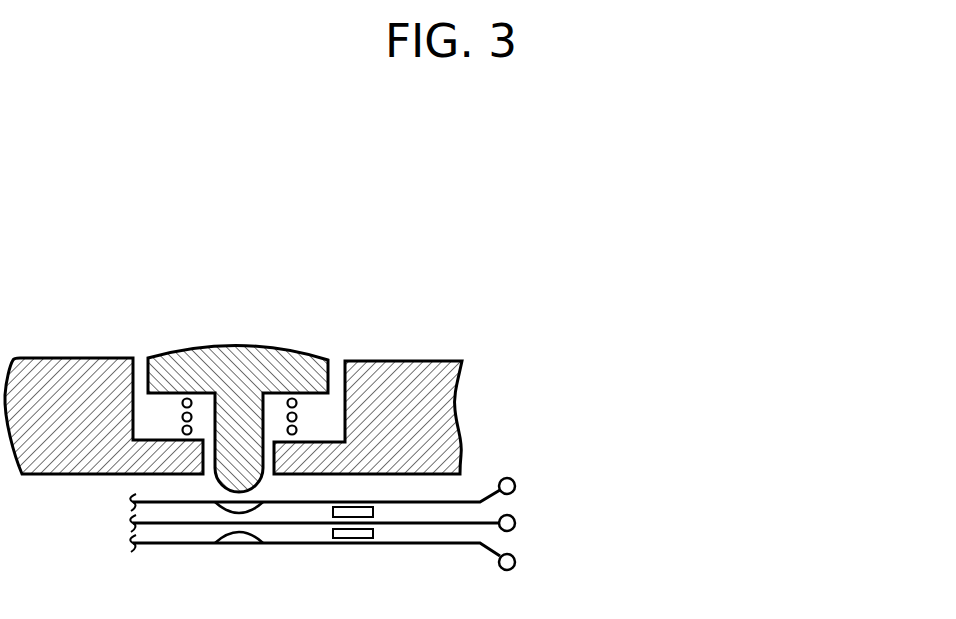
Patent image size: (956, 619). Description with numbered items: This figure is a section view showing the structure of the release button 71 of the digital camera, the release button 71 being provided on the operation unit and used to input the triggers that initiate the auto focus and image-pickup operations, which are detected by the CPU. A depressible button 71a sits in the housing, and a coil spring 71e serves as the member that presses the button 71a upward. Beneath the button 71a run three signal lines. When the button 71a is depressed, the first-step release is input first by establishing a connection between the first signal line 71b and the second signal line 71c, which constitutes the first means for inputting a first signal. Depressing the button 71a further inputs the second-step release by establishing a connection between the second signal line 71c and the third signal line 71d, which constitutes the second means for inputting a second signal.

The release button 71 is at (158, 300).
The button 71a is at (308, 292).
The coil spring 71e is at (297, 418).
The first signal line 71b is at (515, 486).
The second signal line 71c is at (515, 523).
The third signal line 71d is at (515, 565).